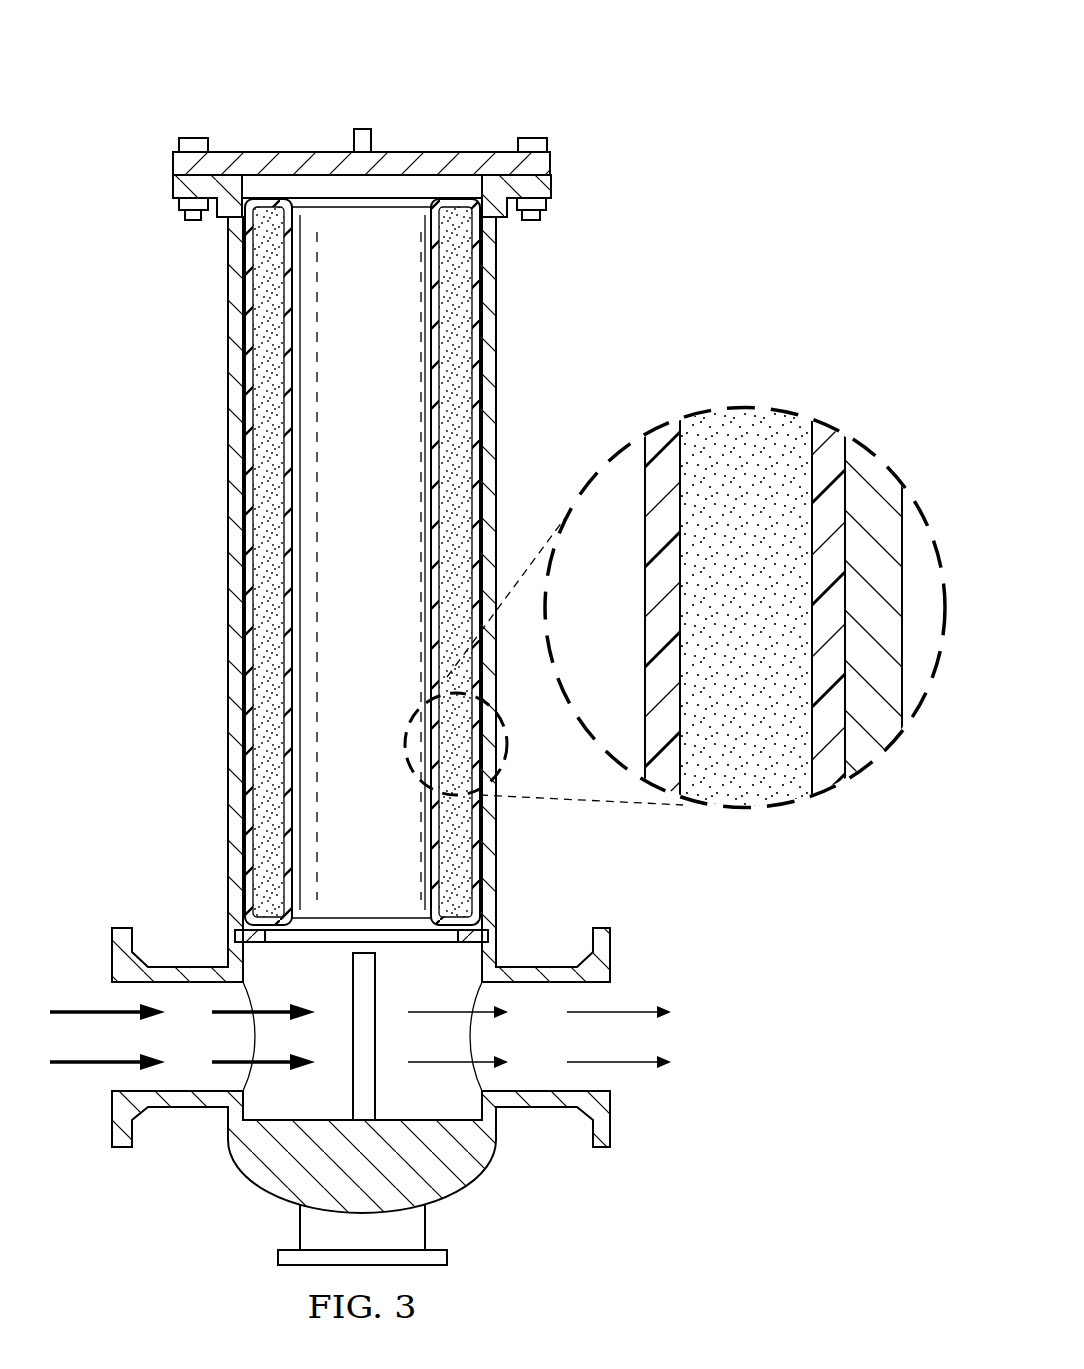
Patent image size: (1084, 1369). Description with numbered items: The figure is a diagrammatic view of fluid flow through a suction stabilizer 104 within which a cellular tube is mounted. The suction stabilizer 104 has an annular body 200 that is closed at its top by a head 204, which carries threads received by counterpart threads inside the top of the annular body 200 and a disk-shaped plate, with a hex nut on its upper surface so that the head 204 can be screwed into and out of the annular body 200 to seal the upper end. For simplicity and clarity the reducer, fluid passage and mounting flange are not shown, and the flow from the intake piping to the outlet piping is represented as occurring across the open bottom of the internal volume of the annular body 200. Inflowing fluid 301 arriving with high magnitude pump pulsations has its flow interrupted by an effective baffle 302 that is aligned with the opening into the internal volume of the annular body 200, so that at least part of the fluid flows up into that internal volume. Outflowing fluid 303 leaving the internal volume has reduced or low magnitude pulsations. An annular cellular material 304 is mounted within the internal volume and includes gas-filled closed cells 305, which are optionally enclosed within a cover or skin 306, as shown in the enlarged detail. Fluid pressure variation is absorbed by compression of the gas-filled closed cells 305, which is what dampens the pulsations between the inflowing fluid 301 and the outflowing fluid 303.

The suction stabilizer 104 is at (356, 632).
The head 204 is at (270, 152).
The annular body 200 is at (228, 560).
The annular cellular material 304 is at (268, 345).
The baffle 302 is at (375, 985).
The inflowing fluid 301 is at (75, 1063).
The outflowing fluid 303 is at (645, 1063).
The gas-filled closed cells 305 is at (746, 610).
The cover or skin 306 is at (745, 594).